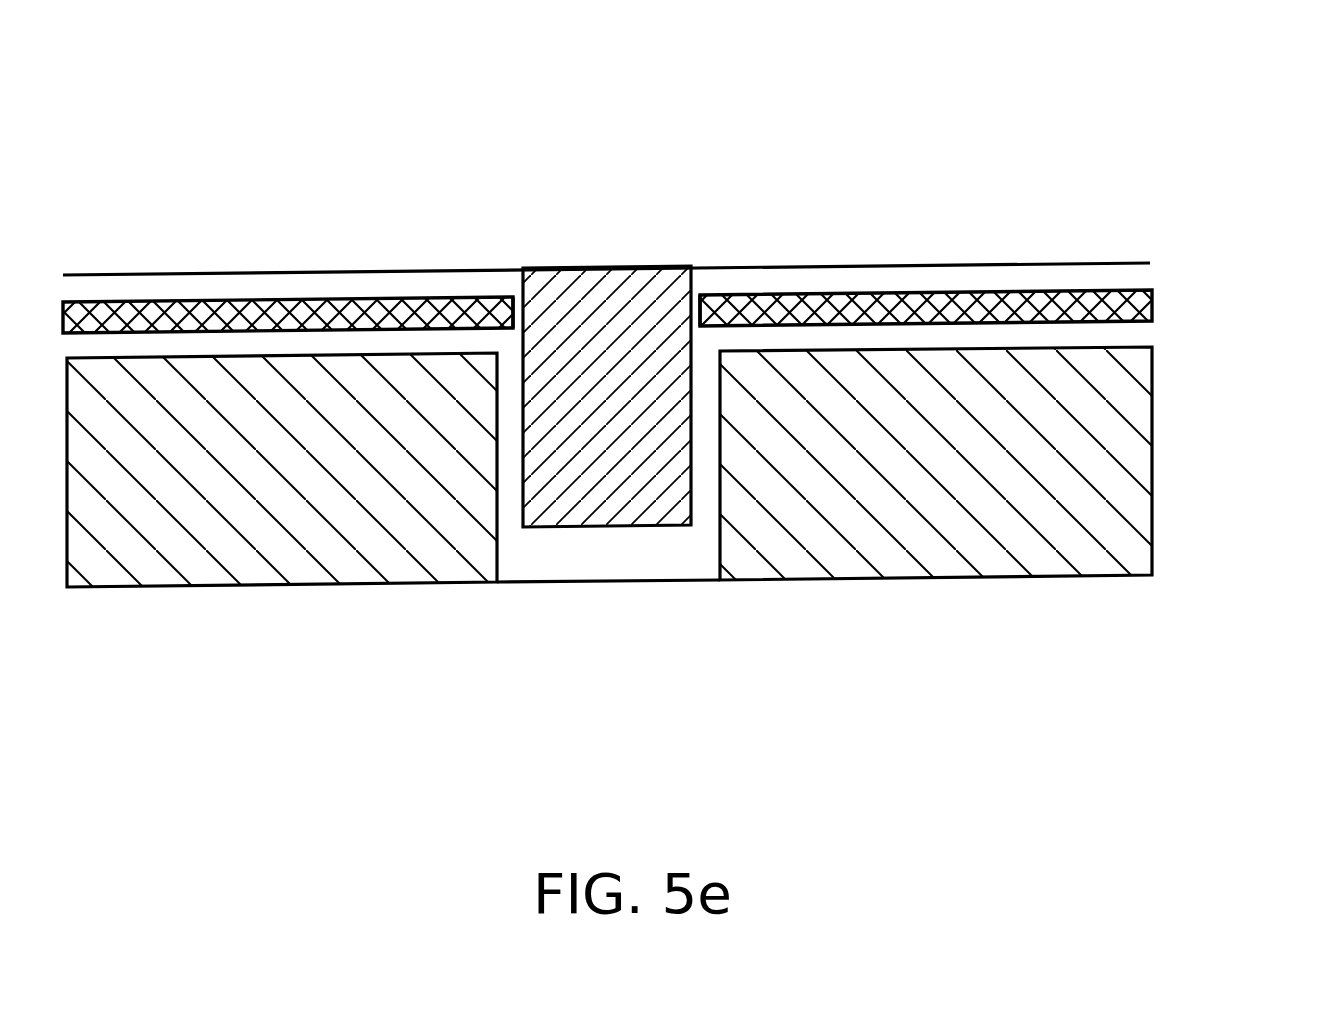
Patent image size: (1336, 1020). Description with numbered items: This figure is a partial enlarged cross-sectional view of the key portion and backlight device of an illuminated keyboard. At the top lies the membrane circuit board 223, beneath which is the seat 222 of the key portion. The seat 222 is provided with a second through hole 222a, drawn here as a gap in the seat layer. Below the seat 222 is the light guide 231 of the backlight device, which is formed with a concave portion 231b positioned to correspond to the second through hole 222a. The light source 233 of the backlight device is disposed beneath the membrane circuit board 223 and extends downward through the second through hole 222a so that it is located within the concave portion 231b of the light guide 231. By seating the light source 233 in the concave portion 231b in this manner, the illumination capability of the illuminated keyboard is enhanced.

The membrane circuit board 223 is at (1110, 260).
The seat 222 is at (1152, 303).
The second through hole 222a is at (695, 312).
The light guide 231 is at (1152, 455).
The concave portion 231b is at (555, 543).
The light source 233 is at (633, 310).